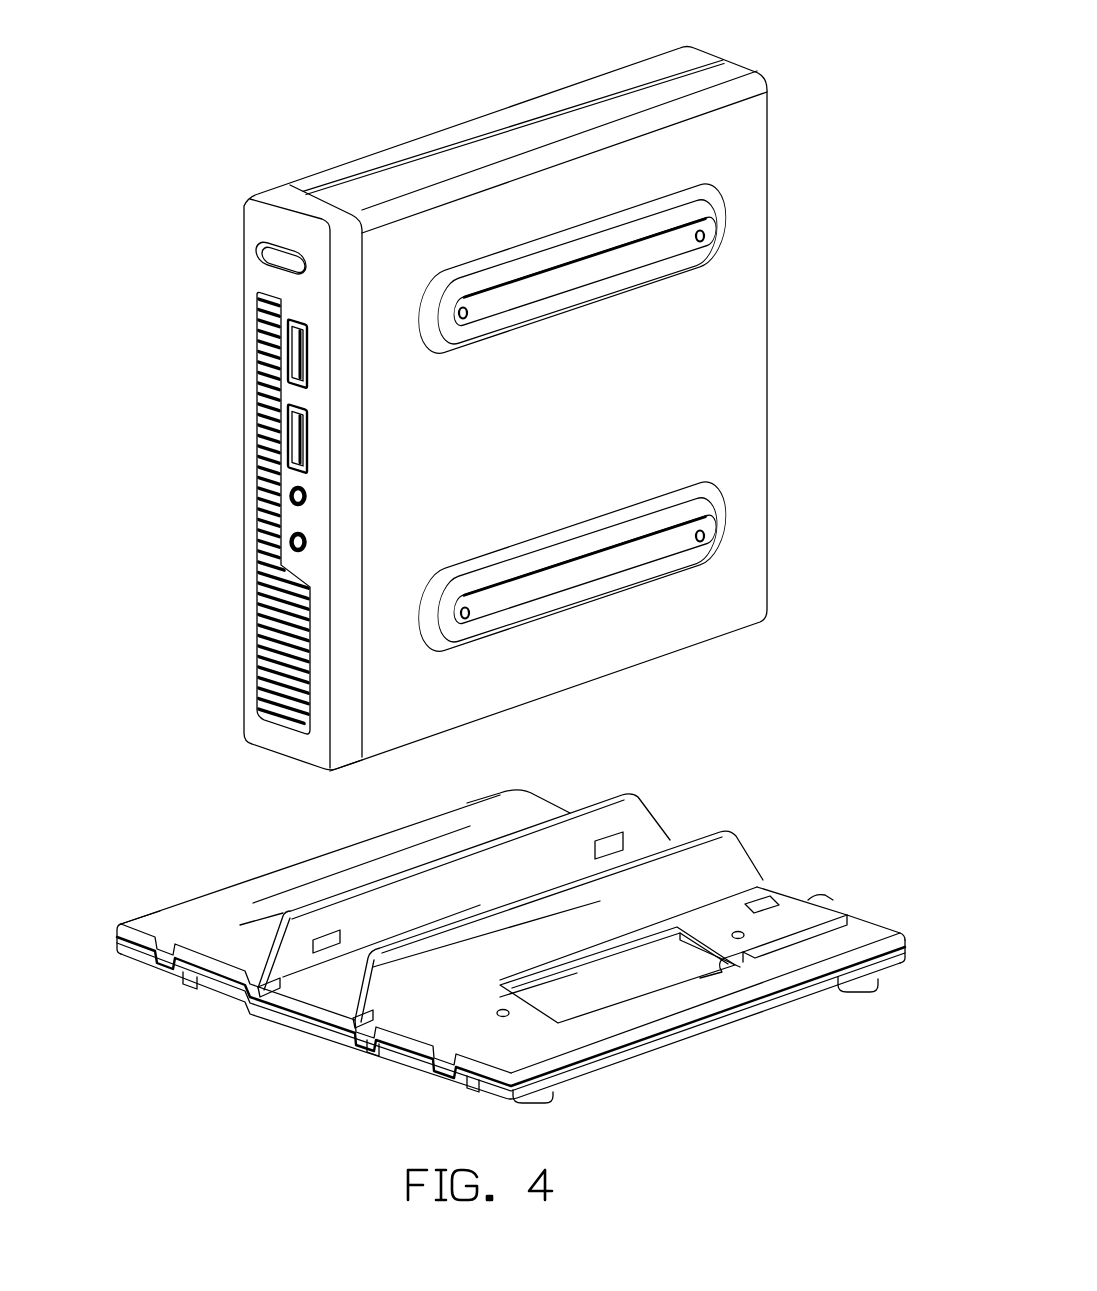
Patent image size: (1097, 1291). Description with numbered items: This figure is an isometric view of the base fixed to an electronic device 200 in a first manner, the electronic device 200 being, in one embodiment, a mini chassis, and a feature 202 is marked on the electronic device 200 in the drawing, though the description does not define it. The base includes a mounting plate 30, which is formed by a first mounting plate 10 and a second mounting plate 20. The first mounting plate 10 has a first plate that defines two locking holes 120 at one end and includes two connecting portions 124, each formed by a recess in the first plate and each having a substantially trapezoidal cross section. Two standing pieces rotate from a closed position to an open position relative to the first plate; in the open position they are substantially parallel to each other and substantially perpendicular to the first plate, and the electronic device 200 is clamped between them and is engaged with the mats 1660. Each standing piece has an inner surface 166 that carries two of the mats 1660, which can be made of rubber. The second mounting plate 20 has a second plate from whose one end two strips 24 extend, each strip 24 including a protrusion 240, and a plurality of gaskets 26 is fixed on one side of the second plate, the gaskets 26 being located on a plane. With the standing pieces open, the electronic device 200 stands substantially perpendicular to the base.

The electronic device 200 is at (723, 72).
The mounting slot 202 is at (706, 237).
The mounting plate 30 is at (163, 857).
The second mounting plate 20 is at (107, 944).
The first mounting plate 10 is at (123, 910).
The connecting portion 124 is at (190, 977).
The gasket 26 is at (551, 1094).
The inner surface 166 is at (597, 815).
The mat 1660 is at (621, 843).
The strip 24 is at (833, 900).
The locking hole 120 is at (765, 893).
The protrusion 240 is at (768, 903).